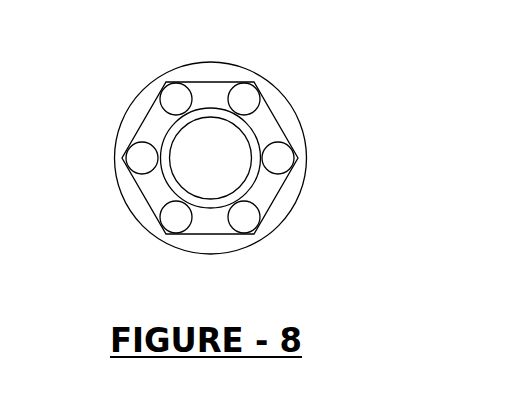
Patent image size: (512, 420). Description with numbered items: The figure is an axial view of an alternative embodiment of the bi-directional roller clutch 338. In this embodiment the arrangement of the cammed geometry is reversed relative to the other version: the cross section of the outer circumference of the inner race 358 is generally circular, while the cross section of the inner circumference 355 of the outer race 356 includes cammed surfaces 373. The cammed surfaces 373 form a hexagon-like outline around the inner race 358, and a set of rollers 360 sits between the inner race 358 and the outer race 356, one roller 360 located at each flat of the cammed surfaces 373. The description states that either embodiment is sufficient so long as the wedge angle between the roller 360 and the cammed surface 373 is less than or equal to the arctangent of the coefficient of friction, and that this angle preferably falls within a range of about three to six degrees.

The bi-directional roller clutch 338 is at (233, 172).
The roller 360 is at (240, 158).
The cammed surfaces 373 is at (287, 182).
The inner circumference 355 is at (266, 191).
The inner race 358 is at (170, 185).
The outer race 356 is at (223, 243).